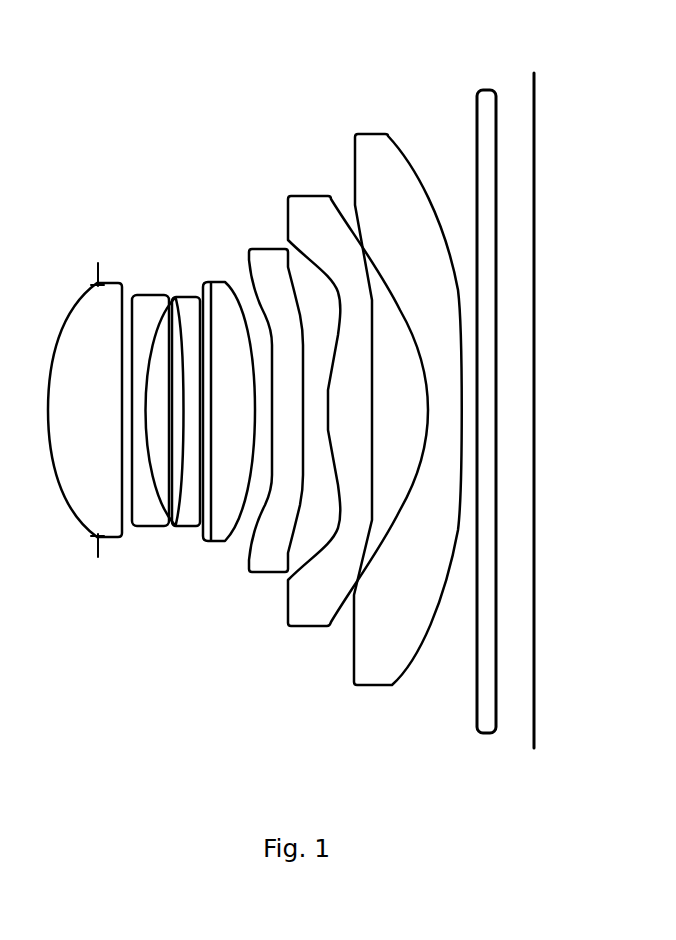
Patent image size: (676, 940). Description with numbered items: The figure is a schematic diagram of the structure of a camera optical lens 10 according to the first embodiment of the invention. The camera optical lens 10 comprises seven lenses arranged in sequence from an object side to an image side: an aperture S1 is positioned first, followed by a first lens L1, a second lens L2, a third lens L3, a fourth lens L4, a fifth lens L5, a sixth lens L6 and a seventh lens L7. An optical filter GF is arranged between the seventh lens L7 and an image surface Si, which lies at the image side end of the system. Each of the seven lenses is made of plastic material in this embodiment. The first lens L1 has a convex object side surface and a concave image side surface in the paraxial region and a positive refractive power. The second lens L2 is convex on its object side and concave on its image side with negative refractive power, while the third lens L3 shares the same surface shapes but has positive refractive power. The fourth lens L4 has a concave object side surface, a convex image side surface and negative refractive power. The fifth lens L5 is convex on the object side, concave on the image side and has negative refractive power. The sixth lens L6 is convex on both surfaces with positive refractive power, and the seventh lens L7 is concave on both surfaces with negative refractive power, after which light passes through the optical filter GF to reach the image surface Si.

The camera optical lens 10 is at (317, 58).
The aperture S1 is at (86, 403).
The first lens L1 is at (87, 393).
The second lens L2 is at (150, 398).
The third lens L3 is at (173, 393).
The fourth lens L4 is at (229, 395).
The fifth lens L5 is at (276, 396).
The sixth lens L6 is at (358, 398).
The seventh lens L7 is at (408, 395).
The optical filter GF is at (483, 395).
The image surface Si is at (534, 394).